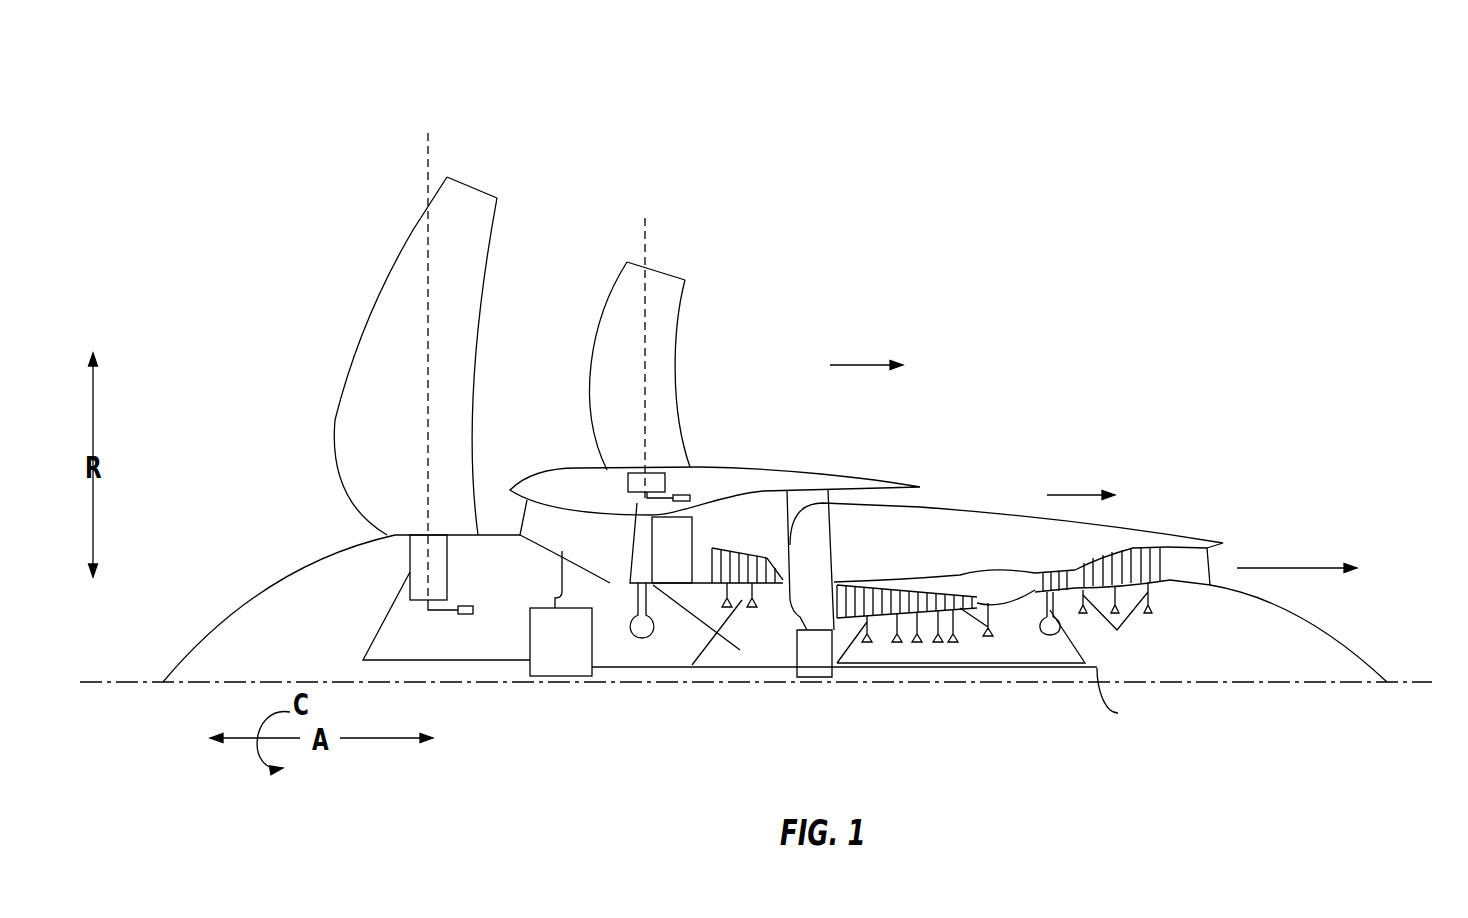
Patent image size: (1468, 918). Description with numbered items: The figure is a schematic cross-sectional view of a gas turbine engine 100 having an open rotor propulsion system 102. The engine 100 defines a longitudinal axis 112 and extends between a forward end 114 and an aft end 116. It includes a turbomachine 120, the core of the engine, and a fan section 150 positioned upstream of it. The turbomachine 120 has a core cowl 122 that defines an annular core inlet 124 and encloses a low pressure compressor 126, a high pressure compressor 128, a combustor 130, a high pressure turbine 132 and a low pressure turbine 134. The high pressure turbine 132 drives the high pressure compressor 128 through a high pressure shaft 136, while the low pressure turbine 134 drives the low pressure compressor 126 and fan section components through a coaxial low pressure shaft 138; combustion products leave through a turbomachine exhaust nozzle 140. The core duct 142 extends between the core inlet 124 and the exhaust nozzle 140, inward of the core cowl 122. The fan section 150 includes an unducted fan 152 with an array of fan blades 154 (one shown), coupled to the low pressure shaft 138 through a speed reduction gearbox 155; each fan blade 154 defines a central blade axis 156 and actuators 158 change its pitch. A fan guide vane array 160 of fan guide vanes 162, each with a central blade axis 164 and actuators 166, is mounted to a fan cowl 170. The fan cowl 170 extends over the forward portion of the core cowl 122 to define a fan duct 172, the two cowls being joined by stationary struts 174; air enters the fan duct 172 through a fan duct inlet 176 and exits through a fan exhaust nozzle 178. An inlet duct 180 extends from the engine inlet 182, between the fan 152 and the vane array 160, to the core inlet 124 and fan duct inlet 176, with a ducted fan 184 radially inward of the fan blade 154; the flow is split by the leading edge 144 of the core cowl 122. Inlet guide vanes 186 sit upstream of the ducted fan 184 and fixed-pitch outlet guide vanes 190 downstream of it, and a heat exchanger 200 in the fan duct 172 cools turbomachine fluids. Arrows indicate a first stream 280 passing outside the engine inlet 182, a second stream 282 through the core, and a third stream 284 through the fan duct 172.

The engine 100 is at (852, 200).
The open rotor propulsion system 102 is at (338, 103).
The longitudinal axis 112 is at (1420, 684).
The forward end 114 is at (162, 680).
The aft end 116 is at (1387, 680).
The turbomachine 120 is at (945, 580).
The core cowl 122 is at (932, 500).
The core inlet 124 is at (698, 575).
The low pressure compressor 126 is at (741, 605).
The high pressure compressor 128 is at (927, 632).
The combustor 130 is at (990, 605).
The high pressure turbine 132 is at (1057, 565).
The low pressure turbine 134 is at (1127, 550).
The high pressure shaft 136 is at (1144, 714).
The low pressure shaft 138 is at (375, 628).
The turbomachine exhaust nozzle 140 is at (1192, 567).
The core duct 142 is at (1010, 585).
The leading edge of the core cowl 144 is at (728, 612).
The fan section 150 is at (278, 240).
The fan 152 is at (282, 407).
The fan blade 154 is at (385, 300).
The speed reduction gearbox 155 is at (557, 653).
The central blade axis 156 is at (430, 163).
The actuator 158 is at (467, 617).
The fan guide vane array 160 is at (560, 297).
The fan guide vane 162 is at (667, 360).
The central blade axis 164 is at (647, 255).
The actuator 166 is at (682, 492).
The fan cowl 170 is at (746, 482).
The fan duct 172 is at (765, 497).
The stationary strut 174 is at (817, 490).
The fan duct inlet 176 is at (700, 535).
The fan exhaust nozzle 178 is at (919, 492).
The inlet duct 180 is at (590, 547).
The engine inlet 182 is at (509, 520).
The ducted fan 184 is at (603, 512).
The inlet guide vanes 186 is at (610, 530).
The outlet guide vanes 190 is at (698, 505).
The heat exchanger 200 is at (737, 570).
The first stream 280 is at (850, 361).
The second stream 282 is at (1297, 567).
The third stream 284 is at (1073, 491).